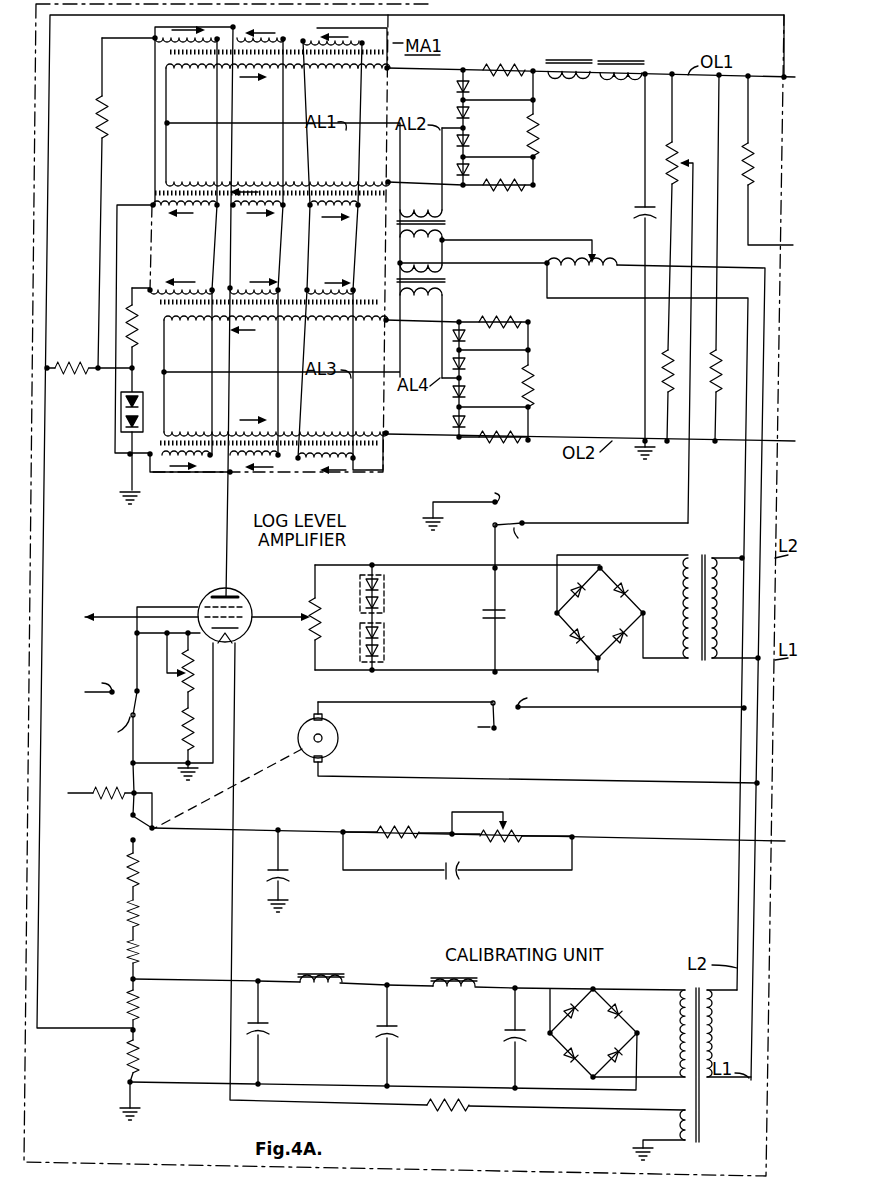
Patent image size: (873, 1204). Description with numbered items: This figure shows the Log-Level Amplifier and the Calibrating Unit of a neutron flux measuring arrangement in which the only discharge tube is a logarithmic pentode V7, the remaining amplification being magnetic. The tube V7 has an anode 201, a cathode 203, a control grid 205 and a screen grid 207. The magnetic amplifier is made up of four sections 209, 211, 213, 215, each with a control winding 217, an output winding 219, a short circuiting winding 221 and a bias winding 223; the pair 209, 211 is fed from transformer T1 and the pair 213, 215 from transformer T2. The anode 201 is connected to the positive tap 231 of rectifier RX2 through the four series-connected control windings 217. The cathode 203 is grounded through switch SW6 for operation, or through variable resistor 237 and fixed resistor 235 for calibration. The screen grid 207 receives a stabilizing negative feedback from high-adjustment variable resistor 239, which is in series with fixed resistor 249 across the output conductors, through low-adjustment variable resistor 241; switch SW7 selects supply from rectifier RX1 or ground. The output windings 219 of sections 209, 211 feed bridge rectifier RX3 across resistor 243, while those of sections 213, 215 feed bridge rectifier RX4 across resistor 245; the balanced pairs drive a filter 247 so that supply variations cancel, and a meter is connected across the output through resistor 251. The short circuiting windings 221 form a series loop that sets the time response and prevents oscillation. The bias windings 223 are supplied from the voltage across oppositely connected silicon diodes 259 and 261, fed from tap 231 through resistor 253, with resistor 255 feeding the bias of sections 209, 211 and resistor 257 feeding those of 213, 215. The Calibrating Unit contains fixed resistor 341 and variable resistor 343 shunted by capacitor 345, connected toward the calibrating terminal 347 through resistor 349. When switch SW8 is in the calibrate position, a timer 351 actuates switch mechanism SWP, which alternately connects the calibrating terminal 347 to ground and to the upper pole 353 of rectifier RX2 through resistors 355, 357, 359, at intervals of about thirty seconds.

The anode 201 is at (203, 595).
The cathode 203 is at (240, 643).
The control grid 205 is at (250, 628).
The screen grid 207 is at (252, 600).
The section of magnetic amplifier 209 is at (348, 96).
The section of magnetic amplifier 211 is at (332, 170).
The section of magnetic amplifier 213 is at (334, 345).
The section of magnetic amplifier 215 is at (340, 430).
The control winding 217 is at (268, 39).
The output winding 219 is at (208, 67).
The short circuiting winding 221 is at (348, 39).
The bias winding 223 is at (170, 38).
The positive tap of rectifier RX2 231 is at (136, 1030).
The fixed resistor 235 is at (185, 738).
The variable resistor 237 is at (184, 690).
The high-adjustment variable resistor 239 is at (676, 150).
The low-adjustment variable resistor 241 is at (318, 632).
The resistor 243 is at (538, 142).
The resistor 245 is at (536, 380).
The filter 247 is at (615, 181).
The fixed resistor 249 is at (660, 357).
The resistor 251 is at (766, 143).
The resistor 253 is at (88, 342).
The resistor 255 is at (104, 92).
The resistor 257 is at (131, 303).
The silicon diode 259 is at (120, 424).
The silicon diode 261 is at (120, 401).
The fixed resistor 341 is at (405, 824).
The variable resistor 343 is at (515, 833).
The capacitor 345 is at (447, 878).
The calibrating terminal 347 is at (94, 789).
The resistor 349 is at (118, 787).
The timer 351 is at (335, 736).
The upper pole of rectifier RX2 353 is at (133, 982).
The resistor 355 is at (133, 950).
The resistor 357 is at (133, 909).
The resistor 359 is at (133, 862).
The discharge tube V7 is at (222, 619).
The rectifier RX1 is at (622, 623).
The rectifier RX2 is at (612, 1043).
The bridge rectifier RX3 is at (515, 128).
The bridge rectifier RX4 is at (515, 389).
The transformer T1 is at (395, 225).
The transformer T2 is at (465, 278).
The switch SW6 is at (128, 705).
The switch SW7 is at (498, 526).
The switch SW8 is at (496, 723).
The switch mechanism SWP is at (130, 822).